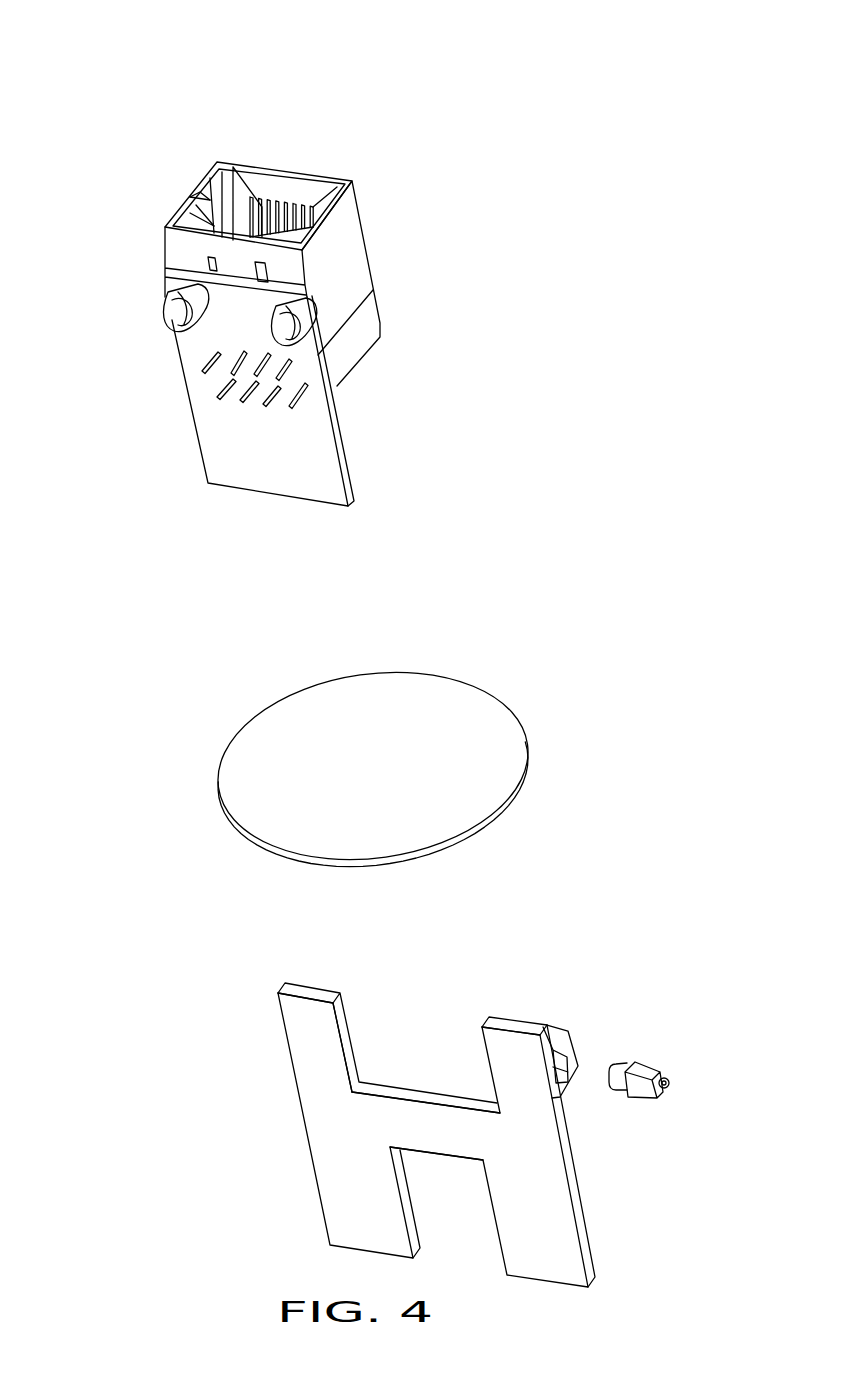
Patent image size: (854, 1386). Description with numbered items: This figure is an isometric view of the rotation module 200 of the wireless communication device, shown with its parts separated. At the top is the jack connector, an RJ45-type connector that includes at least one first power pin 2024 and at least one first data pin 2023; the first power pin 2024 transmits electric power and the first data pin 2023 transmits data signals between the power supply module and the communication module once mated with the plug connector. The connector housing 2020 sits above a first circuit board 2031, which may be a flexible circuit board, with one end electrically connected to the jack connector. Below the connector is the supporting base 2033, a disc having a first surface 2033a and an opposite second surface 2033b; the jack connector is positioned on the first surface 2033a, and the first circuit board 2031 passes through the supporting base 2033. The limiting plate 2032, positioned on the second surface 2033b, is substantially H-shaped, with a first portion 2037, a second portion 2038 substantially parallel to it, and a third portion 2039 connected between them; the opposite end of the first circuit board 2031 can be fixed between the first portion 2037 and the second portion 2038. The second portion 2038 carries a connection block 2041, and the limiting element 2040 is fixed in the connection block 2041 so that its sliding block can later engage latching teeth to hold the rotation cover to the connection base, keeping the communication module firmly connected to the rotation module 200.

The rotation module 200 is at (190, 70).
The connector housing 2020 is at (278, 244).
The first data pin 2023 is at (352, 180).
The first power pin 2024 is at (233, 163).
The first circuit board 2031 is at (213, 441).
The limiting plate 2032 is at (438, 1110).
The supporting base 2033 is at (455, 733).
The first surface 2033a is at (452, 710).
The second surface 2033b is at (296, 862).
The first portion 2037 is at (345, 1018).
The second portion 2038 is at (510, 1022).
The third portion 2039 is at (395, 1122).
The limiting element 2040 is at (660, 1072).
The connection block 2041 is at (569, 1050).